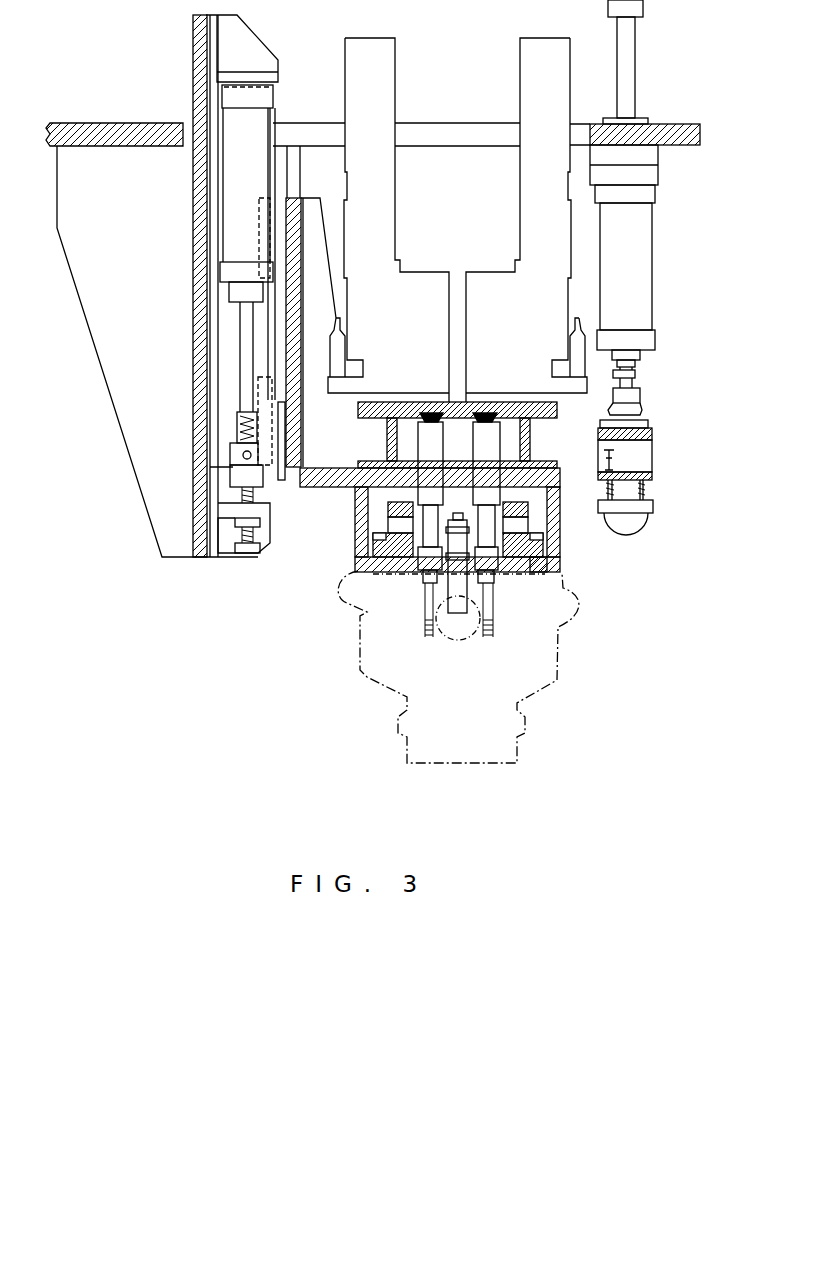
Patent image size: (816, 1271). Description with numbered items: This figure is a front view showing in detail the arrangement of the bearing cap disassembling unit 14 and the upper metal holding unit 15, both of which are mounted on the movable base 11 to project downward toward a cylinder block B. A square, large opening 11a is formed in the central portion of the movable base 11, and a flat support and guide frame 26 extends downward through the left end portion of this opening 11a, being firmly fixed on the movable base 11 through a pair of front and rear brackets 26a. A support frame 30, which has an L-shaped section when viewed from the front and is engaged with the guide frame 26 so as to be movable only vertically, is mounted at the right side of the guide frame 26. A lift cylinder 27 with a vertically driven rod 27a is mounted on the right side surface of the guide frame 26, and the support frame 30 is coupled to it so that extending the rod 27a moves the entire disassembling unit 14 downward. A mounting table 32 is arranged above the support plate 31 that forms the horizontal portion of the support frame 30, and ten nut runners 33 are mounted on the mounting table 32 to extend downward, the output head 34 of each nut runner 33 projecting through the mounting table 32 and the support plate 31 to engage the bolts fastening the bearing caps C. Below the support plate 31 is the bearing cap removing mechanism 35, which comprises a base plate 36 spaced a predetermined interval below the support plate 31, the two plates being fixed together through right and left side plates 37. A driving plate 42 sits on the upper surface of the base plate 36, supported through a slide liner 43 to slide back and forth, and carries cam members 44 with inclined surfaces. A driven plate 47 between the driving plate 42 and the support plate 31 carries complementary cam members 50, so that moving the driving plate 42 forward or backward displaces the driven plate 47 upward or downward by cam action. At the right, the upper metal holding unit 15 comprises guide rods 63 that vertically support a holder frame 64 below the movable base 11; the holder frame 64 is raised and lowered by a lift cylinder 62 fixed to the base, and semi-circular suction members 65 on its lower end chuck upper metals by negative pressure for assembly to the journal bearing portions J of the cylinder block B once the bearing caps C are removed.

The movable base 11 is at (681, 132).
The opening 11a is at (468, 133).
The bearing cap disassembling unit 14 is at (421, 565).
The upper metal holding unit 15 is at (659, 528).
The guide frame 26 is at (193, 98).
The brackets 26a is at (117, 373).
The lift cylinder 27 is at (222, 217).
The rod 27a is at (240, 357).
The support frame 30 is at (305, 492).
The support plate 31 is at (325, 468).
The mounting table 32 is at (410, 401).
The nut runners 33 is at (380, 358).
The output head 34 is at (497, 585).
The bearing cap removing mechanism 35 is at (533, 462).
The base plate 36 is at (357, 571).
The side plates 37 is at (560, 500).
The driving plate 42 is at (523, 555).
The slide liner 43 is at (503, 575).
The cam members 44 is at (400, 536).
The driven plate 47 is at (520, 507).
The cam members 50 is at (392, 520).
The lift cylinder 62 is at (648, 262).
The guide rods 63 is at (633, 73).
The holder frame 64 is at (652, 450).
The suction members 65 is at (642, 523).
The cylinder block B is at (360, 667).
The bearing caps C is at (437, 597).
The journal bearing portions J is at (462, 640).